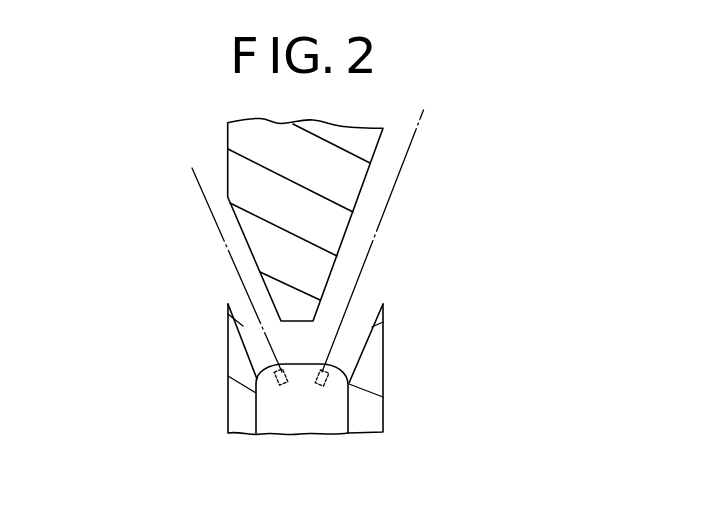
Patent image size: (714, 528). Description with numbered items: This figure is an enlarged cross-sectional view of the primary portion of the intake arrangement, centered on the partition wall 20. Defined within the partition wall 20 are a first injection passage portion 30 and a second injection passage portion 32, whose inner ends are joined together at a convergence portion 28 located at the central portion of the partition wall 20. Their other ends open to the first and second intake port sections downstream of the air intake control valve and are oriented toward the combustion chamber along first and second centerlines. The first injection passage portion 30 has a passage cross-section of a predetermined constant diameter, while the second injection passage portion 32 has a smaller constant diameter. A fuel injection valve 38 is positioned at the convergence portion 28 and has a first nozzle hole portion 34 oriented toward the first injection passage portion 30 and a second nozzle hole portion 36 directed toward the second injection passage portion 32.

The partition wall 20 is at (365, 413).
The convergence portion 28 is at (293, 343).
The first injection passage portion 30 is at (355, 338).
The second injection passage portion 32 is at (250, 331).
The first nozzle hole portion 34 is at (349, 385).
The second nozzle hole portion 36 is at (256, 392).
The fuel injection valve 38 is at (317, 420).